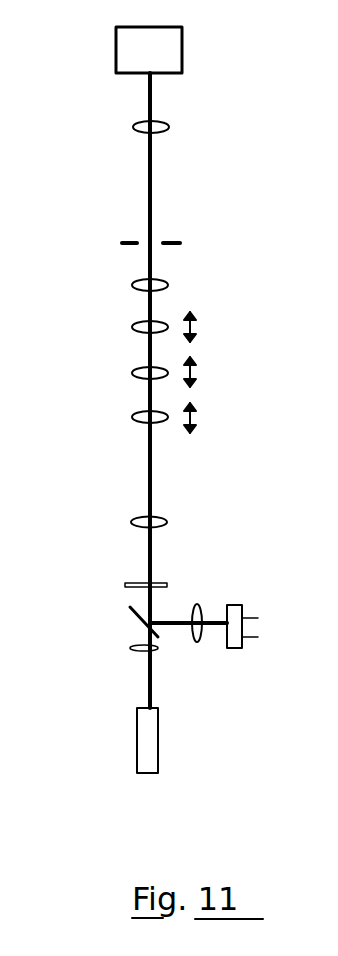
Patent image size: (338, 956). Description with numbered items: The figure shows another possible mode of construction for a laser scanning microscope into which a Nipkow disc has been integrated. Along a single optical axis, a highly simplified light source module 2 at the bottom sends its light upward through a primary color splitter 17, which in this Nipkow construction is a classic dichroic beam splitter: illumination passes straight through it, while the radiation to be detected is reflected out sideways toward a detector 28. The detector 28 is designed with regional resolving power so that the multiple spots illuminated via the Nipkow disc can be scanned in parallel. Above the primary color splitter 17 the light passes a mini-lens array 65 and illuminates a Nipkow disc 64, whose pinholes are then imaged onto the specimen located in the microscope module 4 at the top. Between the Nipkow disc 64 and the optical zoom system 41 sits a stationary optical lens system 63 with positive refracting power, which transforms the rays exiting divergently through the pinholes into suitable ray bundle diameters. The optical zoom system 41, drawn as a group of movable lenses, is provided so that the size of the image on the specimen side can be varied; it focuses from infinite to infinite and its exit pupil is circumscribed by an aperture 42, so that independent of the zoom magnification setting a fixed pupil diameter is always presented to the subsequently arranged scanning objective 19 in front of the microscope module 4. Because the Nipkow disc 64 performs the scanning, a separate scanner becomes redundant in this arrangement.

The microscope module 4 is at (116, 52).
The scanning objective 19 is at (170, 124).
The aperture 42 is at (180, 242).
The optical zoom system 41 is at (243, 265).
The stationary optical lens system 63 is at (167, 518).
The Nipkow disc 64 is at (128, 581).
The primary color splitter 17 is at (142, 617).
The mini-lens array 65 is at (138, 650).
The detector 28 is at (237, 603).
The light source module 2 is at (168, 760).